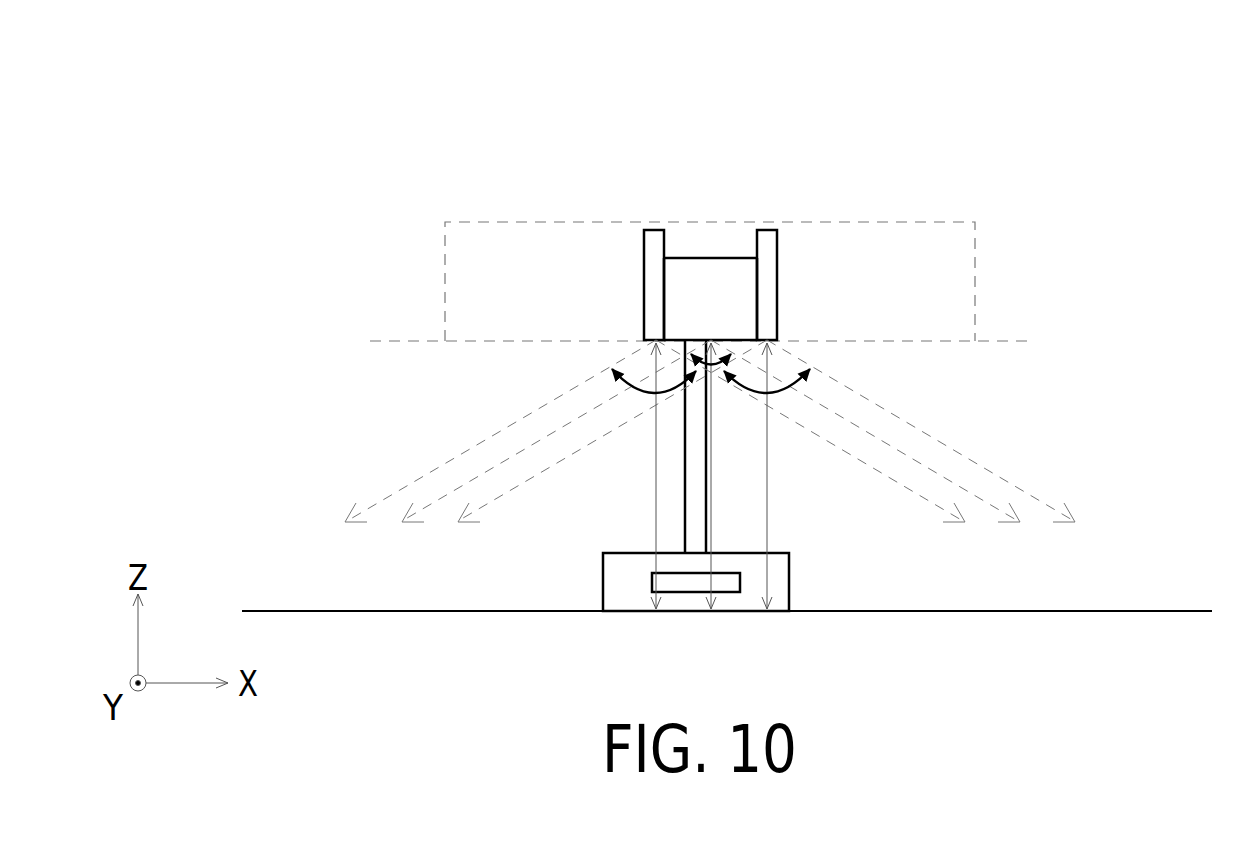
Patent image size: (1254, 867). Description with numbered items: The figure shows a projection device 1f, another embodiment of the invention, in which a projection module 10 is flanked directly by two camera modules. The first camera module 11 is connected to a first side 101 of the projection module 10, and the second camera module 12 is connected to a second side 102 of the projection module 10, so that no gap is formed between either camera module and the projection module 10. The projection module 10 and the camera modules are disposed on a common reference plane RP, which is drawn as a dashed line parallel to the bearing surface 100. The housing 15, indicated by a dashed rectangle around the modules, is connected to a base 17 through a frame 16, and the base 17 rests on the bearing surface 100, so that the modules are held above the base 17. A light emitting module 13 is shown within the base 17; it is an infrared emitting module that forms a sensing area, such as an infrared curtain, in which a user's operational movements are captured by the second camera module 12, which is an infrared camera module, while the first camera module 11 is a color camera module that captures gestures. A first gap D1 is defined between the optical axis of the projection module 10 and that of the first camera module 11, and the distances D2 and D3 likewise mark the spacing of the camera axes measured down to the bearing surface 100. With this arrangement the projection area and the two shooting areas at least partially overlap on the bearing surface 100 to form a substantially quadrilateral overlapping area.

The projection device 1f is at (322, 73).
The projection module 10 is at (712, 257).
The first camera module 11 is at (767, 253).
The second camera module 12 is at (655, 253).
The first side 101 is at (753, 281).
The second side 102 is at (666, 281).
The light emitting module 13 is at (695, 587).
The housing 15 is at (947, 222).
The frame 16 is at (697, 517).
The base 17 is at (778, 593).
The bearing surface 100 is at (1192, 609).
The reference plane RP is at (1036, 340).
The first gap D1 is at (731, 476).
The second distance D2 is at (789, 476).
The third distance D3 is at (635, 476).